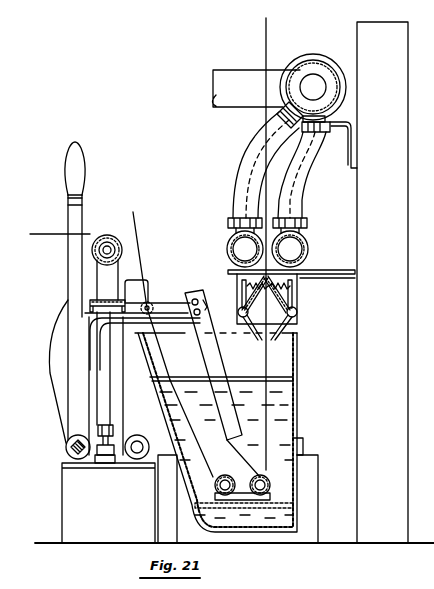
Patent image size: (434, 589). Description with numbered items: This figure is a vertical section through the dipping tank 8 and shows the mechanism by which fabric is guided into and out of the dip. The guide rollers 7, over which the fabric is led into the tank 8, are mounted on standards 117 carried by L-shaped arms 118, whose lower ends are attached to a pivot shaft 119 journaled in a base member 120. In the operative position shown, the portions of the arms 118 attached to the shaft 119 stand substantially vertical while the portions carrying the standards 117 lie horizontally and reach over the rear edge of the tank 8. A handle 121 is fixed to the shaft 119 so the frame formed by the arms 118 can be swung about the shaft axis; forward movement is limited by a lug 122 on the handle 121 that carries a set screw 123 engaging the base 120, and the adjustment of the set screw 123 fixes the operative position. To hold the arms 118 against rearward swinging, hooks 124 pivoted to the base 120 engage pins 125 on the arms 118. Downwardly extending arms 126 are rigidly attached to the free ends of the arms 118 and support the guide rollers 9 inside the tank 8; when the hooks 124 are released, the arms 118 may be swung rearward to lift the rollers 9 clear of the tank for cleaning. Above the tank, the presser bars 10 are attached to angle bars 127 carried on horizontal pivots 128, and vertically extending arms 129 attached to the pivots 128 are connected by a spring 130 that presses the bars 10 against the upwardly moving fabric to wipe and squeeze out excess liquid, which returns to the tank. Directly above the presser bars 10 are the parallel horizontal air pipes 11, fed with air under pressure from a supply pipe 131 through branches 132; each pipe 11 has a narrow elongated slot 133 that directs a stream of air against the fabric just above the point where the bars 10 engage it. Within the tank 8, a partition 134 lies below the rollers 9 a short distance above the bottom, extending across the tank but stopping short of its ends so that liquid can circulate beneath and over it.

The guide rollers 7 is at (92, 252).
The dipping tank 8 is at (298, 405).
The guide rollers 9 is at (217, 470).
The presser bars 10 is at (267, 335).
The air pipes 11 is at (230, 237).
The standards 117 is at (133, 240).
The L-shaped arms 118 is at (53, 375).
The pivot shaft 119 is at (66, 447).
The base member 120 is at (62, 500).
The handle 121 is at (68, 190).
The lug 122 is at (113, 462).
The set screw 123 is at (105, 424).
The hooks 124 is at (117, 375).
The pins 125 is at (150, 298).
The downwardly extending arms 126 is at (214, 352).
The angle bars 127 is at (236, 310).
The horizontal pivots 128 is at (240, 300).
The vertically extending arms 129 is at (300, 298).
The spring 130 is at (310, 269).
The supply pipe 131 is at (302, 57).
The branches 132 is at (232, 188).
The elongated slot 133 is at (227, 251).
The partition 134 is at (268, 512).